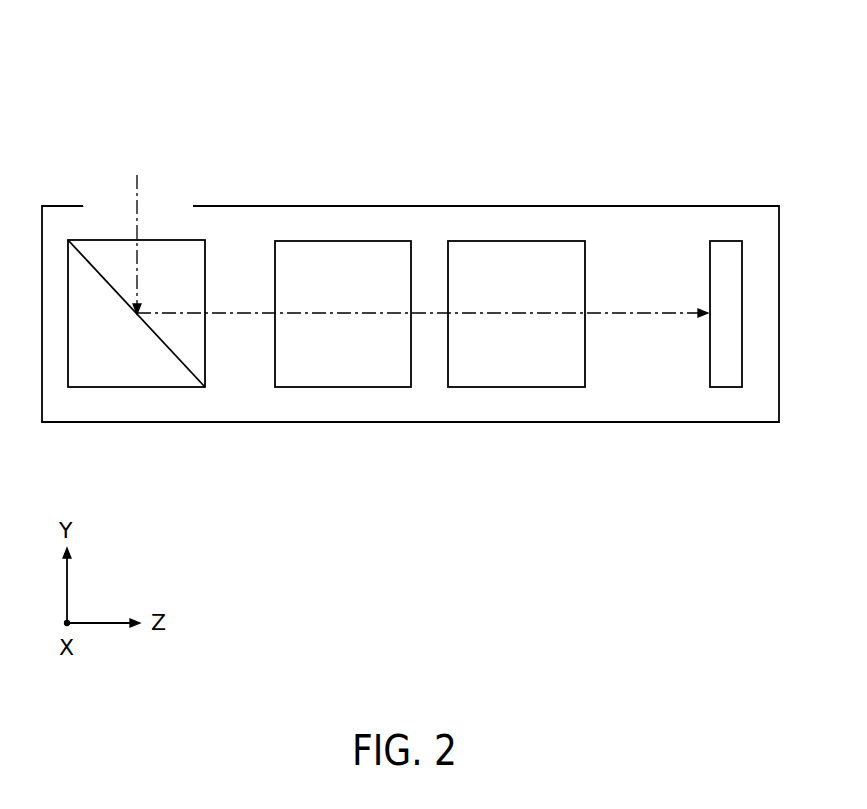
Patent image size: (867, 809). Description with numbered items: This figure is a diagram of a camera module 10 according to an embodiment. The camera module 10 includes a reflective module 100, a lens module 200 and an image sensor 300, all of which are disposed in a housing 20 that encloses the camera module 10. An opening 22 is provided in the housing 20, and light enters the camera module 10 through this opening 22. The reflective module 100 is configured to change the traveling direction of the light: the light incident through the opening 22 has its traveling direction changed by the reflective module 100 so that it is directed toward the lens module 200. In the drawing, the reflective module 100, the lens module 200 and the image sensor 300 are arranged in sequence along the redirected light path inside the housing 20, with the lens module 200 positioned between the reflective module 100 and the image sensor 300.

The camera module 10 is at (437, 97).
The housing 20 is at (625, 418).
The opening 22 is at (163, 208).
The reflective module 100 is at (168, 357).
The lens module 200 is at (475, 378).
The image sensor 300 is at (723, 380).